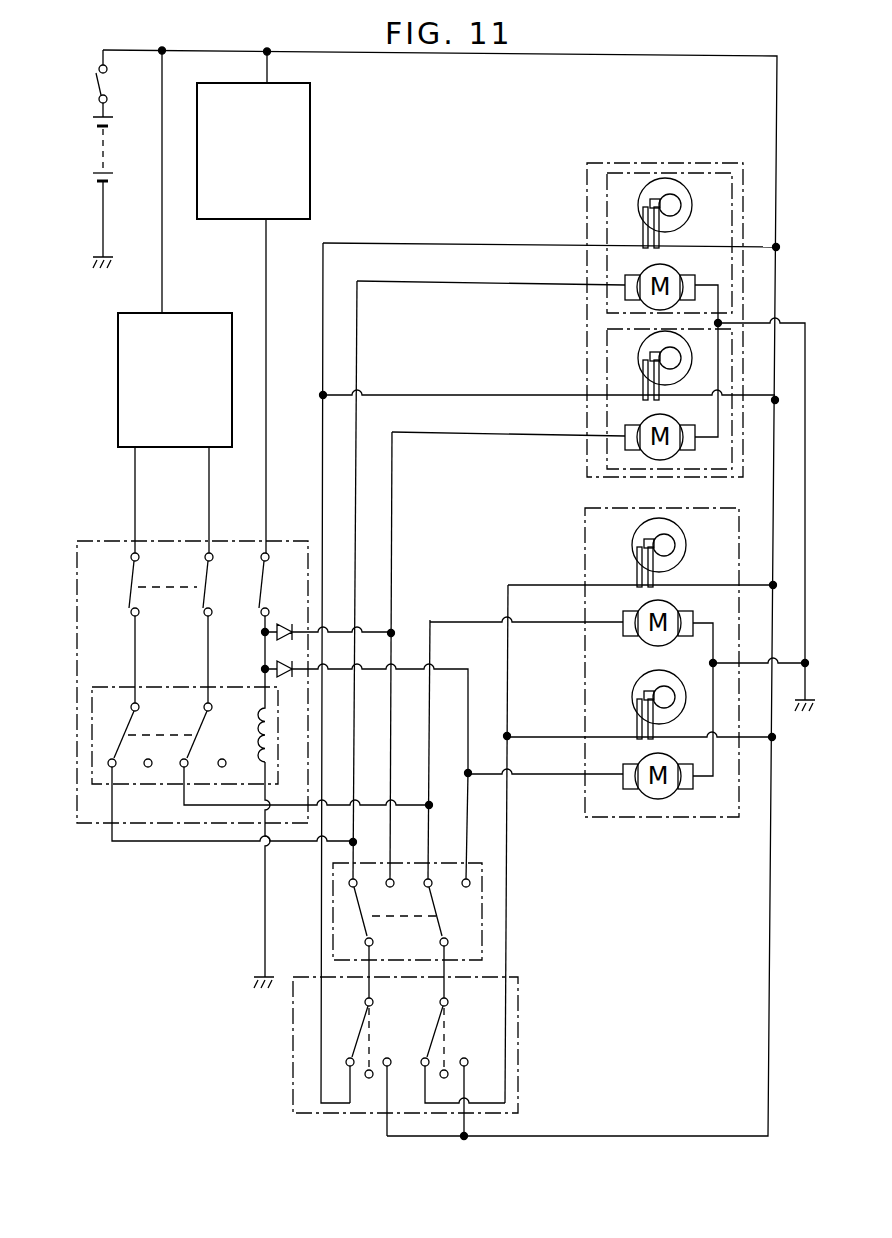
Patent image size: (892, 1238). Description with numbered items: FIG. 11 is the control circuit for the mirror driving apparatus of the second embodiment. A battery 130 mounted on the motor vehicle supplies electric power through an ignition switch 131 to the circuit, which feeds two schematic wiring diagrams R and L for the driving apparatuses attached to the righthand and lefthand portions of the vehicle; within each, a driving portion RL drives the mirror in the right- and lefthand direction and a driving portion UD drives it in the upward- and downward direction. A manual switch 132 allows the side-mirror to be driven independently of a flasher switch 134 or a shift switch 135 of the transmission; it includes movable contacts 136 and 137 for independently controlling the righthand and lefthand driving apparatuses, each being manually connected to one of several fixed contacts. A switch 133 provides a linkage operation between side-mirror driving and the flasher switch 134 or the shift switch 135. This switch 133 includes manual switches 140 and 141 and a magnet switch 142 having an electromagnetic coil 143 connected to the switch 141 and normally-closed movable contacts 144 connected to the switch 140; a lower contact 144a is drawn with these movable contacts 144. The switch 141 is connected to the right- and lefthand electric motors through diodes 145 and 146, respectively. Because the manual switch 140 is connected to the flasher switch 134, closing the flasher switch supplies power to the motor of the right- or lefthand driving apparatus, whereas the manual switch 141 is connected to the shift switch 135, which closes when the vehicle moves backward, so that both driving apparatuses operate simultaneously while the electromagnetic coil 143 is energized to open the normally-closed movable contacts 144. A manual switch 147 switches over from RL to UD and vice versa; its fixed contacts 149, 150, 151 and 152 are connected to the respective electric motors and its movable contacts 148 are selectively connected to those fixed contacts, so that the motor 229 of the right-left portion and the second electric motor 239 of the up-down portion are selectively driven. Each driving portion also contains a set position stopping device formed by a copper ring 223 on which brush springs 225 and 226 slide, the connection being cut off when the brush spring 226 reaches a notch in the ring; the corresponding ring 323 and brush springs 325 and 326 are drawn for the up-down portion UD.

The battery 130 is at (110, 152).
The ignition switch 131 is at (108, 83).
The manual switch 132 is at (518, 1062).
The switch 133 is at (98, 541).
The flasher switch 134 is at (208, 313).
The shift switch 135 is at (310, 93).
The movable contact 136 is at (360, 1042).
The movable contact 137 is at (437, 1042).
The manual switch 140 is at (130, 605).
The manual switch 141 is at (260, 598).
The magnet switch 142 is at (178, 687).
The electromagnetic coil 143 is at (258, 745).
The normally-closed movable contacts 144 is at (130, 742).
The relay contact 144a is at (112, 790).
The diode 145 is at (289, 626).
The diode 146 is at (284, 661).
The manual switch 147 is at (482, 950).
The movable contacts 148 is at (442, 930).
The fixed contact 149 is at (349, 883).
The fixed contact 150 is at (391, 919).
The fixed contact 151 is at (428, 890).
The fixed contact 152 is at (471, 883).
The copper ring 223 is at (688, 186).
The brush spring 225 is at (643, 236).
The brush spring 226 is at (661, 236).
The electric motor 229 is at (640, 275).
The second electric motor 239 is at (640, 428).
The lamp 323 is at (640, 345).
The lamp terminal 325 is at (643, 385).
The lamp terminal 326 is at (656, 392).
The righthand driving circuit R is at (737, 163).
The right-left driving portion RL is at (607, 187).
The up-down driving portion UD is at (607, 334).
The lefthand driving circuit L is at (716, 817).